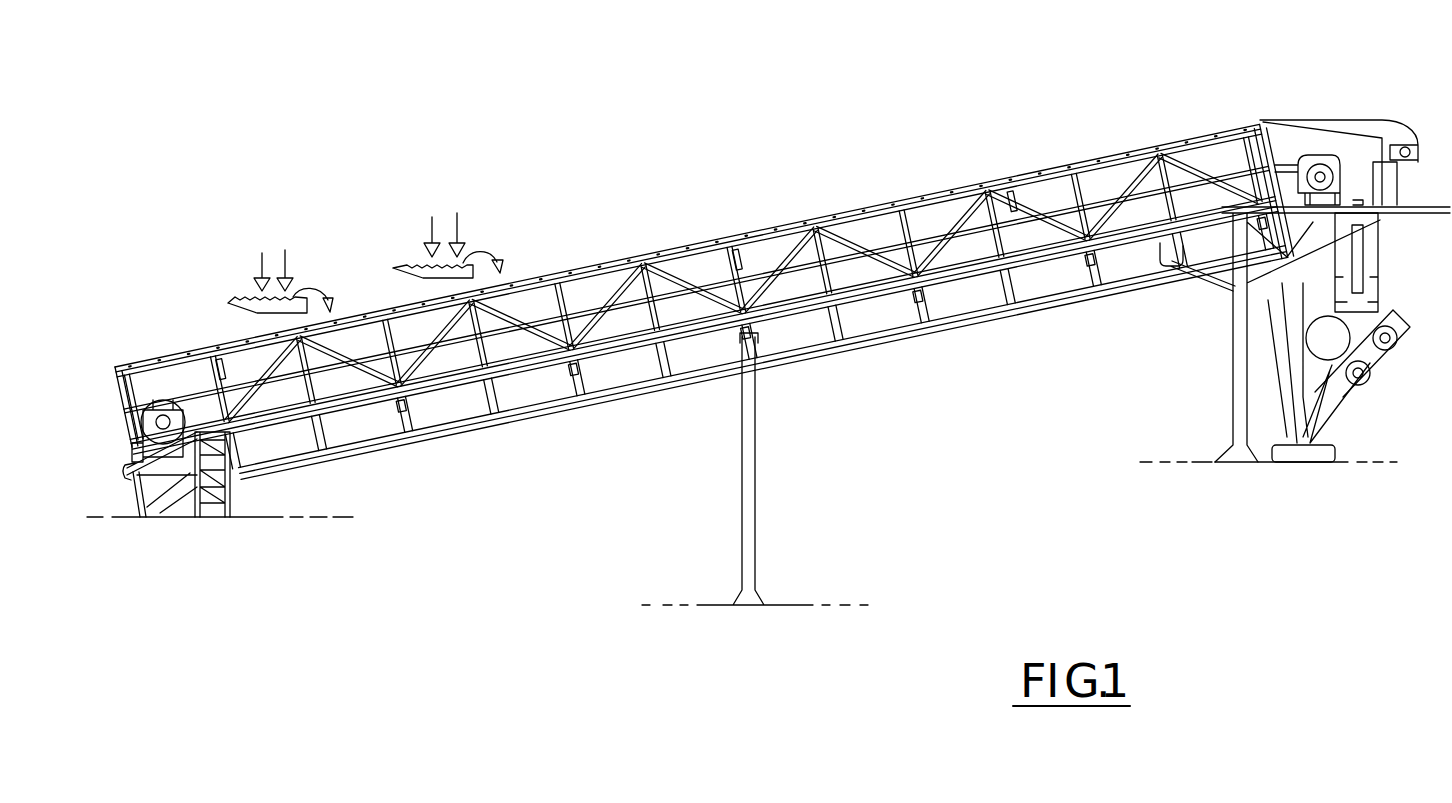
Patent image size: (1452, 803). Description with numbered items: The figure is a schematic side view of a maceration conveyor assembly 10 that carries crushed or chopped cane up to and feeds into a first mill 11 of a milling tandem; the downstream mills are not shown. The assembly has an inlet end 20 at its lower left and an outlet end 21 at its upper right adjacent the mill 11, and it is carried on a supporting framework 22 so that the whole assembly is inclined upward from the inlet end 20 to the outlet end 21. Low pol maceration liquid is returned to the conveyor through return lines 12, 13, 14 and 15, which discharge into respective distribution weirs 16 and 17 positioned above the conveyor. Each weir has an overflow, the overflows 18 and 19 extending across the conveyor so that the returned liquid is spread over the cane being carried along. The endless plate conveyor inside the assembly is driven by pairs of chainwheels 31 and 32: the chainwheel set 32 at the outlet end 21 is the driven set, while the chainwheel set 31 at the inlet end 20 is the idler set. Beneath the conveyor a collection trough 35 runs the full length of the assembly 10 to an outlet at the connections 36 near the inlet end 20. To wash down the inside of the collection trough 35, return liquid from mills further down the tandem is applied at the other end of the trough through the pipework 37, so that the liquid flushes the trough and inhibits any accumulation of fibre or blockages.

The maceration conveyor assembly 10 is at (843, 130).
The first mill 11 is at (1378, 378).
The return line 12 is at (460, 218).
The return line 13 is at (430, 218).
The return line 14 is at (262, 265).
The return line 15 is at (286, 258).
The distribution weir 16 is at (226, 313).
The distribution weir 17 is at (513, 268).
The overflow 18 is at (320, 290).
The overflow 19 is at (483, 250).
The inlet end 20 is at (120, 484).
The outlet end 21 is at (1378, 115).
The supporting framework 22 is at (717, 398).
The chainwheel 31 is at (163, 405).
The chainwheel 32 is at (1316, 155).
The collection trough 35 is at (790, 335).
The connections 36 is at (132, 518).
The pipework 37 is at (1190, 268).